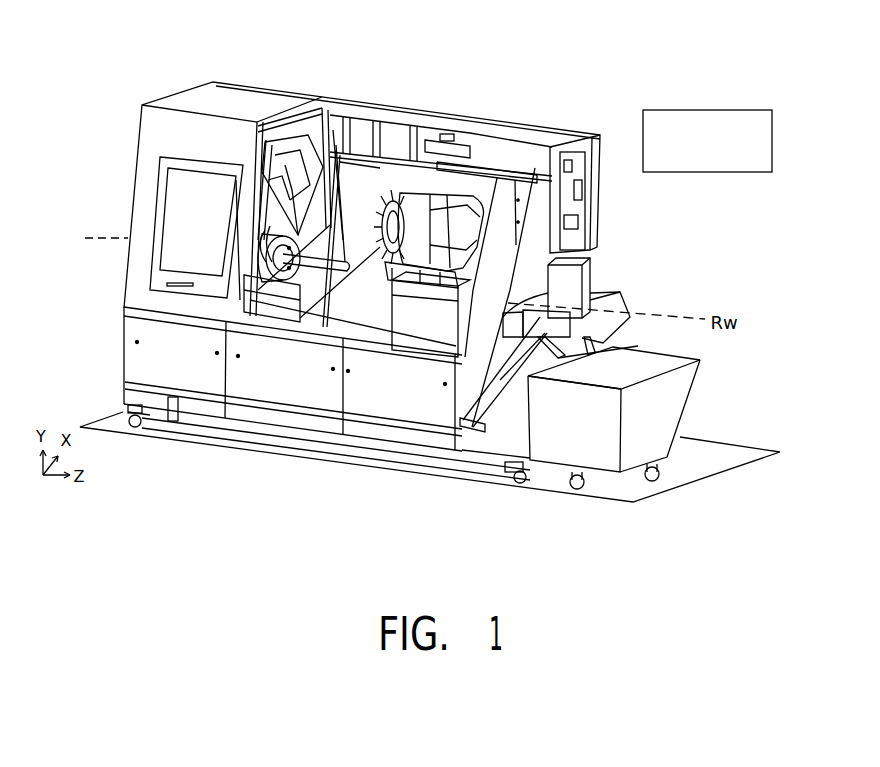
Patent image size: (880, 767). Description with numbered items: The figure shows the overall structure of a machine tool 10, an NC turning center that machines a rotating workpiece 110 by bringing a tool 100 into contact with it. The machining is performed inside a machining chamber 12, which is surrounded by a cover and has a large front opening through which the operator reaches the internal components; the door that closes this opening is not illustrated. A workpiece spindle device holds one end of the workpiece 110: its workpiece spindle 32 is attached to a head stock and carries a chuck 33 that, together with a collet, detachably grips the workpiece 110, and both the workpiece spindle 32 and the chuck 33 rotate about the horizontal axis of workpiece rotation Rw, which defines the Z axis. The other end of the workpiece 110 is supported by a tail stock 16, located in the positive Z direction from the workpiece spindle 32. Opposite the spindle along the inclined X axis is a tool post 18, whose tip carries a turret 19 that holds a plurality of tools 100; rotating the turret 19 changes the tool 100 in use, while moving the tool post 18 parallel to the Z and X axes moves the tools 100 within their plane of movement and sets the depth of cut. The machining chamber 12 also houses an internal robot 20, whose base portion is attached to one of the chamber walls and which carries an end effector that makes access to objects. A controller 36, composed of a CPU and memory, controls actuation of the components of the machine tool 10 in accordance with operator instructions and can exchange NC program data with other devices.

The machine tool 10 is at (503, 90).
The machining chamber 12 is at (367, 216).
The tail stock 16 is at (405, 345).
The tool post 18 is at (437, 190).
The turret 19 is at (395, 200).
The internal robot 20 is at (279, 178).
The workpiece spindle 32 is at (322, 190).
The chuck 33 is at (243, 292).
The controller 36 is at (722, 110).
The tool 100 is at (380, 236).
The workpiece 110 is at (301, 265).